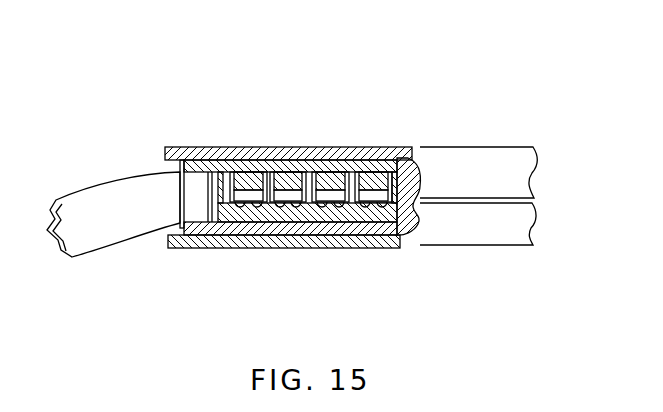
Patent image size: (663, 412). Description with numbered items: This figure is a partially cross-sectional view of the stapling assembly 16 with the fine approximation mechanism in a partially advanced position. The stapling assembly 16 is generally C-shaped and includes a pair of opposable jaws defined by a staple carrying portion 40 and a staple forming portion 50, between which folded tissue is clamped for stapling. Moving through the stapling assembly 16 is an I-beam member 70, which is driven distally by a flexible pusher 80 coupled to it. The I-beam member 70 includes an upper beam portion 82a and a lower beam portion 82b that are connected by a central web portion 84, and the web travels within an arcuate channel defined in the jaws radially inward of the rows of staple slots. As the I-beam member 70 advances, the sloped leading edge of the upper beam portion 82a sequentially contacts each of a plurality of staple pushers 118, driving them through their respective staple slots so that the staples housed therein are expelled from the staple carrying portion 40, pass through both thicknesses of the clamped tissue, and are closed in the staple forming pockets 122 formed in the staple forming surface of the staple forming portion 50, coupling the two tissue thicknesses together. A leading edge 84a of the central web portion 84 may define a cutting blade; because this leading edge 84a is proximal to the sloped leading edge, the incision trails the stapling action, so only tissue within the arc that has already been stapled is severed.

The stapling assembly 16 is at (402, 122).
The staple carrying portion 40 is at (517, 158).
The staple forming portion 50 is at (512, 235).
The I-beam member 70 is at (214, 157).
The flexible pusher 80 is at (105, 203).
The upper beam portion 82a is at (255, 162).
The lower beam portion 82b is at (178, 248).
The central web portion 84 is at (192, 200).
The leading edge 84a is at (233, 237).
The staple pushers 118 is at (373, 164).
The staple forming pockets 122 is at (365, 210).